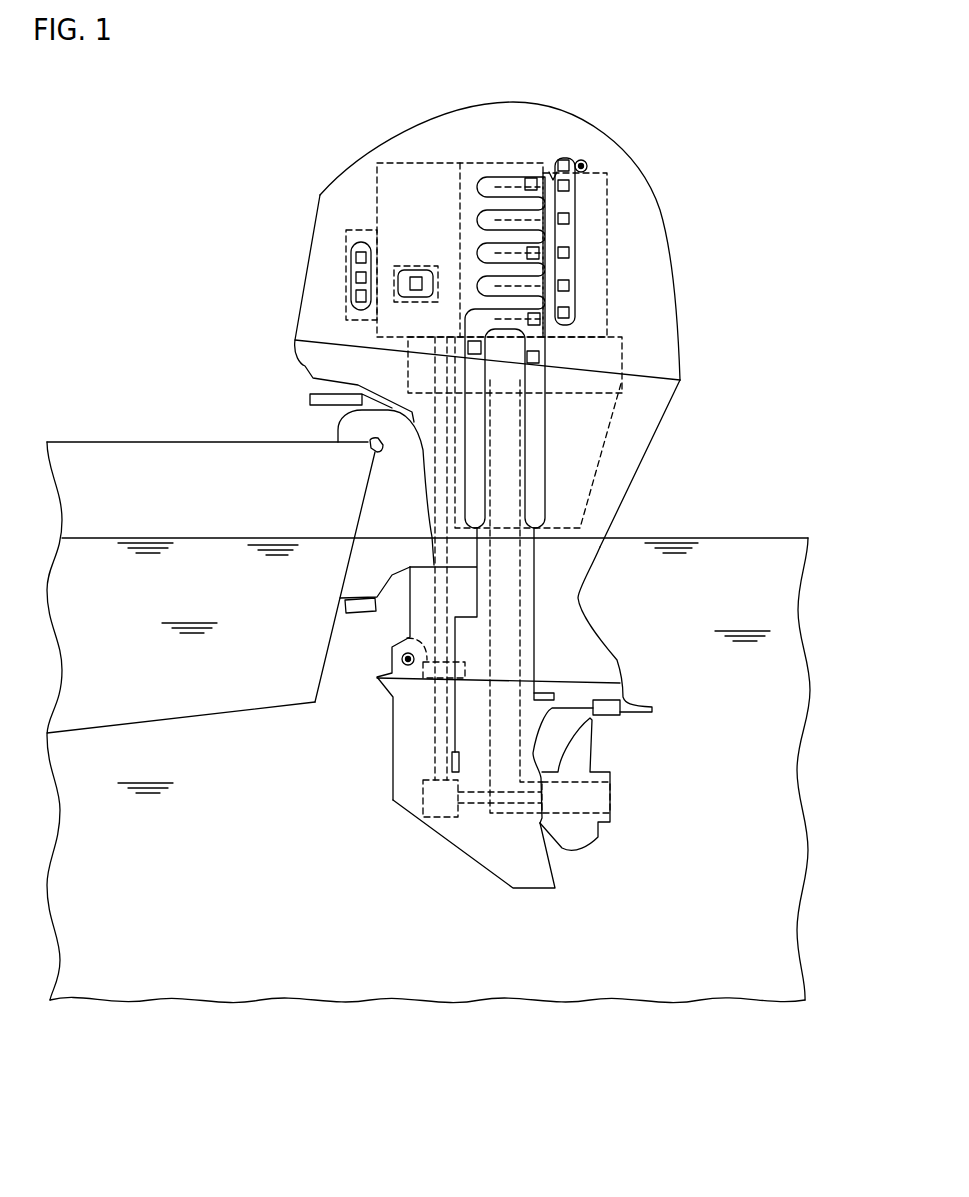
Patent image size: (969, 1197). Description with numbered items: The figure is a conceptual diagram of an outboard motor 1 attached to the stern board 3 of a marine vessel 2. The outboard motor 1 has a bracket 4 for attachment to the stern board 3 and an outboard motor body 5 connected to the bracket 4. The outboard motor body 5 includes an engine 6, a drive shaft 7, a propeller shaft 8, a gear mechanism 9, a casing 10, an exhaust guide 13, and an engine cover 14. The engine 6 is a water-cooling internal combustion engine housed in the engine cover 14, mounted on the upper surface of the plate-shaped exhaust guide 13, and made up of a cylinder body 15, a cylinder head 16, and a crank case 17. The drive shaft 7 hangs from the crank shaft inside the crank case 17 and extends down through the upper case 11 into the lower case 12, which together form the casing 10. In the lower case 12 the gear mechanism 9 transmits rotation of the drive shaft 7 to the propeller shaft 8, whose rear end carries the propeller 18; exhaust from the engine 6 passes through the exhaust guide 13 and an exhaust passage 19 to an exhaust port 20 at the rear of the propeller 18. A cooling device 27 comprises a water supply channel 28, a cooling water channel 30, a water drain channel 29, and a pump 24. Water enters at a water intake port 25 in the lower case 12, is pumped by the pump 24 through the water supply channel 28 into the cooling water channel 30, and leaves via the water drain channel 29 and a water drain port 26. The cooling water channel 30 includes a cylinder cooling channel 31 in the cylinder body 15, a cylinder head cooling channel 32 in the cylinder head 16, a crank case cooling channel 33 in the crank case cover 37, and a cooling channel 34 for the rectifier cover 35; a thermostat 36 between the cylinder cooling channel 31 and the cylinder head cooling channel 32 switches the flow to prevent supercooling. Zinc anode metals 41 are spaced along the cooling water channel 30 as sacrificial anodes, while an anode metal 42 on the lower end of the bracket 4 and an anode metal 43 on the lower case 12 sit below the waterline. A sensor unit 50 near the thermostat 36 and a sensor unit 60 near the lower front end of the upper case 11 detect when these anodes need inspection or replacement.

The outboard motor 1 is at (592, 94).
The marine vessel 2 is at (133, 460).
The stern board 3 is at (326, 688).
The bracket 4 is at (368, 512).
The outboard motor body 5 is at (692, 353).
The engine 6 is at (417, 160).
The drive shaft 7 is at (440, 485).
The propeller shaft 8 is at (480, 803).
The gear mechanism 9 is at (432, 818).
The casing 10 is at (666, 441).
The upper case 11 is at (610, 493).
The lower case 12 is at (392, 737).
The exhaust guide 13 is at (407, 367).
The engine cover 14 is at (637, 172).
The cylinder body 15 is at (467, 163).
The cylinder head 16 is at (607, 262).
The crank case 17 is at (385, 175).
The propeller 18 is at (580, 843).
The exhaust passage 19 is at (520, 620).
The exhaust port 20 is at (612, 797).
The pump 24 is at (407, 638).
The water intake port 25 is at (452, 762).
The water drain port 26 is at (548, 690).
The cooling device 27 is at (588, 238).
The water supply channel 28 is at (475, 570).
The water drain channel 29 is at (534, 577).
The cooling water channel 30 is at (570, 303).
The cylinder cooling channel 31 is at (497, 203).
The cylinder head cooling channel 32 is at (567, 200).
The crank case cooling channel 33 is at (353, 285).
The cooling channel 34 is at (407, 297).
The rectifier cover 35 is at (403, 266).
The thermostat 36 is at (552, 173).
The crank case cover 37 is at (347, 300).
The anode metals 41 is at (398, 283).
The anode metal 42 is at (357, 598).
The anode metal 43 is at (612, 715).
The sensor unit 50 is at (583, 160).
The sensor unit 60 is at (402, 660).